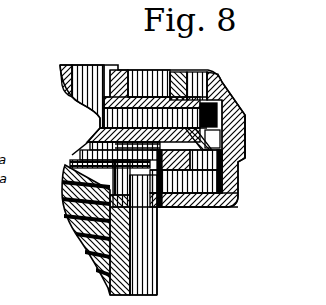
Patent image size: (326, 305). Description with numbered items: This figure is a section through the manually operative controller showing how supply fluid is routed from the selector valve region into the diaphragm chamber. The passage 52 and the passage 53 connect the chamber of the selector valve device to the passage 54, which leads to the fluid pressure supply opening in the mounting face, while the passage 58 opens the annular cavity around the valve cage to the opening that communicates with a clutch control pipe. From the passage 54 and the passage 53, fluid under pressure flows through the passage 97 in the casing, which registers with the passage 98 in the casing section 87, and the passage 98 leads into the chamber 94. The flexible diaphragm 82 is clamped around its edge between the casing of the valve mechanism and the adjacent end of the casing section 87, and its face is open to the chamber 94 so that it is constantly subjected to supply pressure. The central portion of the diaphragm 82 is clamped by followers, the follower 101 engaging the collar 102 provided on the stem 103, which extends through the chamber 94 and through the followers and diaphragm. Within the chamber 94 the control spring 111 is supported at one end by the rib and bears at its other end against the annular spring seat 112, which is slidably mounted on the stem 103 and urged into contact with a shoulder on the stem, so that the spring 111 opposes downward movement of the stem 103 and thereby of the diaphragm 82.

The passage 52 is at (86, 78).
The passage 53 is at (132, 80).
The passage 58 is at (158, 80).
The passage 54 is at (196, 74).
The passage 97 is at (238, 128).
The diaphragm 82 is at (96, 141).
The follower 101 is at (80, 162).
The annular spring seat 112 is at (78, 181).
The control spring 111 is at (63, 196).
The stem 103 is at (66, 214).
The collar 102 is at (160, 205).
The passage 98 is at (200, 196).
The chamber 94 is at (110, 250).
The casing section 87 is at (140, 284).